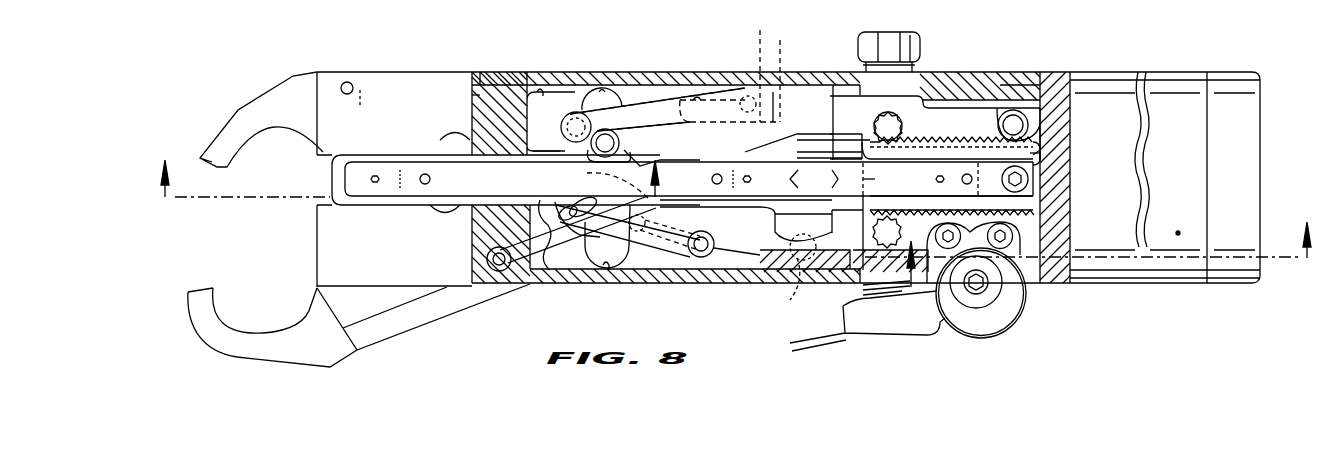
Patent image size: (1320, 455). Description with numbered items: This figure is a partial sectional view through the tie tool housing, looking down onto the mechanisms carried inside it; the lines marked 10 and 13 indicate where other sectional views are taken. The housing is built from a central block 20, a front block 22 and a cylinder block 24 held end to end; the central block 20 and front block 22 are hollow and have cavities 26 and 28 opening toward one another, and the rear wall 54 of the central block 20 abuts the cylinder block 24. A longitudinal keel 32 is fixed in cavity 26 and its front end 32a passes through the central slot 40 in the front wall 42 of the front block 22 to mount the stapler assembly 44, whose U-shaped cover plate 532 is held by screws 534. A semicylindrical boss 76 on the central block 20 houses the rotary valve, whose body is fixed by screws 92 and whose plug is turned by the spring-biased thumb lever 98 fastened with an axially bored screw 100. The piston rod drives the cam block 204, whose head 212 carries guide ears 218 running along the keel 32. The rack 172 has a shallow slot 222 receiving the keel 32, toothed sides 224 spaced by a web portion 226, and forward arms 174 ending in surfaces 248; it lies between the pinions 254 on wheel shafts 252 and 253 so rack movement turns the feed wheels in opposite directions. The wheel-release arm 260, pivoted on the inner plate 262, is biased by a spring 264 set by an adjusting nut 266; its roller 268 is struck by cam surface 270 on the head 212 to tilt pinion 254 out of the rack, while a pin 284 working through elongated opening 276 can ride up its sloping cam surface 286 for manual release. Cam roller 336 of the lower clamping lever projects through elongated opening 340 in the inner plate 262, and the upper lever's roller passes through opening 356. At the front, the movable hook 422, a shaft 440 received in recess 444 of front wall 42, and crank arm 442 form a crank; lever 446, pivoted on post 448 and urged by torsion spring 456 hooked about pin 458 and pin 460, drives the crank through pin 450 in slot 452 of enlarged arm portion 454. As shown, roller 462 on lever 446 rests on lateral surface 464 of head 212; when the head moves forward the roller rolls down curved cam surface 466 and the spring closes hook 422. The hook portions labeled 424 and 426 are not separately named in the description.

The section line 10- 10 is at (1089, 266).
The section line 13- 13 is at (411, 191).
The central block 20 is at (1054, 72).
The front block 22 is at (487, 72).
The cylinder block 24 is at (1178, 72).
The cavity 26 is at (1000, 108).
The cavity 28 is at (540, 92).
The keel member 32 is at (674, 188).
The front end of the keel 32a is at (405, 189).
The central slot 40 is at (527, 150).
The front wall 42 is at (480, 97).
The stapler assembly 44 is at (392, 205).
The rear wall 54 is at (1044, 153).
The semicylindrical boss 76 is at (1026, 292).
The screws 92 is at (1040, 240).
The thumb lever 98 is at (815, 342).
The axially bored screw 100 is at (1004, 312).
The rack 172 is at (1043, 132).
The arms 174 is at (838, 85).
The cam block 204 is at (826, 132).
The head 212 is at (752, 204).
The guide ears 218 is at (760, 178).
The longitudinal slot 222 is at (1040, 186).
The toothed sides 224 is at (914, 144).
The body portion 226 is at (888, 178).
The forward surfaces 248 is at (826, 161).
The shaft 252 is at (874, 120).
The shaft 253 is at (952, 201).
The pinions 254 is at (932, 108).
The wheel-release arm 260 is at (977, 135).
The inner plate 262 is at (653, 100).
The spring 264 is at (918, 62).
The adjusting nut 266 is at (890, 45).
The roller 268 is at (578, 112).
The cam surface 270 is at (773, 92).
The elongated opening 276 is at (696, 98).
The pin 284 is at (745, 96).
The sloping cam surface 286 is at (771, 65).
The cam roller 336 is at (621, 139).
The elongated opening 340 is at (603, 88).
The elongated opening 356 is at (606, 270).
The movable hook 422 is at (431, 329).
The upper jaw 424 is at (215, 140).
The lower jaw hook 426 is at (215, 338).
The shaft 440 is at (520, 275).
The crank arm 442 is at (522, 285).
The recess 444 is at (488, 250).
The lever 446 is at (745, 275).
The pivot post 448 is at (703, 257).
The pin 450 is at (586, 244).
The slot 452 is at (562, 205).
The enlarged crank arm portion 454 is at (640, 160).
The torsion spring 456 is at (722, 262).
The pin 458 is at (652, 240).
The pin 460 is at (620, 203).
The cam roller 462 is at (790, 300).
The lateral side surface 464 is at (772, 226).
The curved cam surface 466 is at (790, 244).
The cover plate 532 is at (382, 157).
The screws 534 is at (455, 146).